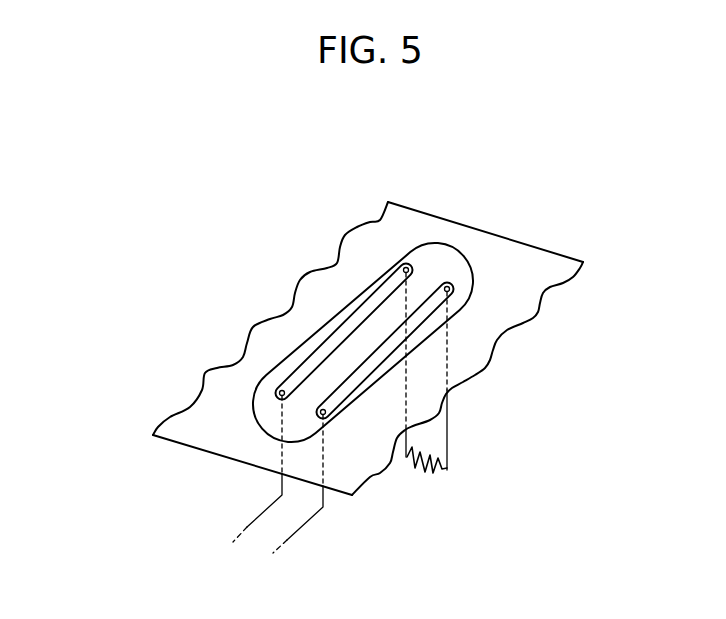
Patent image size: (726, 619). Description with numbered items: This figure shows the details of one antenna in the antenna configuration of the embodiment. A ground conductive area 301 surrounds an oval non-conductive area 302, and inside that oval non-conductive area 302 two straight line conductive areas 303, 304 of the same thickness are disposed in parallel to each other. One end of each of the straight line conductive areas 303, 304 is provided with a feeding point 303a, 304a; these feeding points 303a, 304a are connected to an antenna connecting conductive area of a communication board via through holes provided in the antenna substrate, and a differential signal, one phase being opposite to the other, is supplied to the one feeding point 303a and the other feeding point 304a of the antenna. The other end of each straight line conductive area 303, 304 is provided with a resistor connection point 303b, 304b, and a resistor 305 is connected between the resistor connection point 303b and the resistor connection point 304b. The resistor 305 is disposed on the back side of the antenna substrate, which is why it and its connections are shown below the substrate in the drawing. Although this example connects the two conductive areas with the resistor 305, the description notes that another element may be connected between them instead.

The ground conductive area 301 is at (535, 259).
The oval non-conductive area 302 is at (445, 263).
The straight line conductive area 303 is at (343, 330).
The feeding point 303a is at (281, 392).
The resistor connection point 303b is at (404, 266).
The straight line conductive area 304 is at (337, 422).
The feeding point 304a is at (324, 418).
The resistor connection point 304b is at (450, 290).
The resistor 305 is at (433, 450).